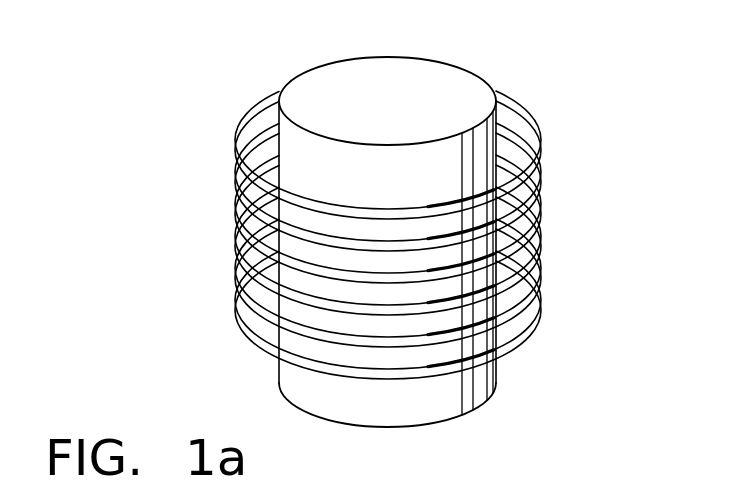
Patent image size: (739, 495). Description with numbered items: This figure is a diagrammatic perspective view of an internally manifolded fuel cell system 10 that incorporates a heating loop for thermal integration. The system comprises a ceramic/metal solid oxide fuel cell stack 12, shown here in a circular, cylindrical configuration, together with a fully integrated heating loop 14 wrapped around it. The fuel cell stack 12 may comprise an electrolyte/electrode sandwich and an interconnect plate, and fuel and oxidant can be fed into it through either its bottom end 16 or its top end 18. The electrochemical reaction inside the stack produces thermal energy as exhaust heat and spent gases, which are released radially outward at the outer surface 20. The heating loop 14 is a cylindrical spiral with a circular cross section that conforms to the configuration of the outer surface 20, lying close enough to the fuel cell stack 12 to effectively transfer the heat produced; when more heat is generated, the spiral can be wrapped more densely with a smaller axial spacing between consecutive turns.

The fuel cell system 10 is at (440, 228).
The fuel cell stack 12 is at (366, 228).
The heating loop 14 is at (540, 240).
The bottom end 16 is at (462, 412).
The top end 18 is at (376, 82).
The outer surface 20 is at (323, 163).